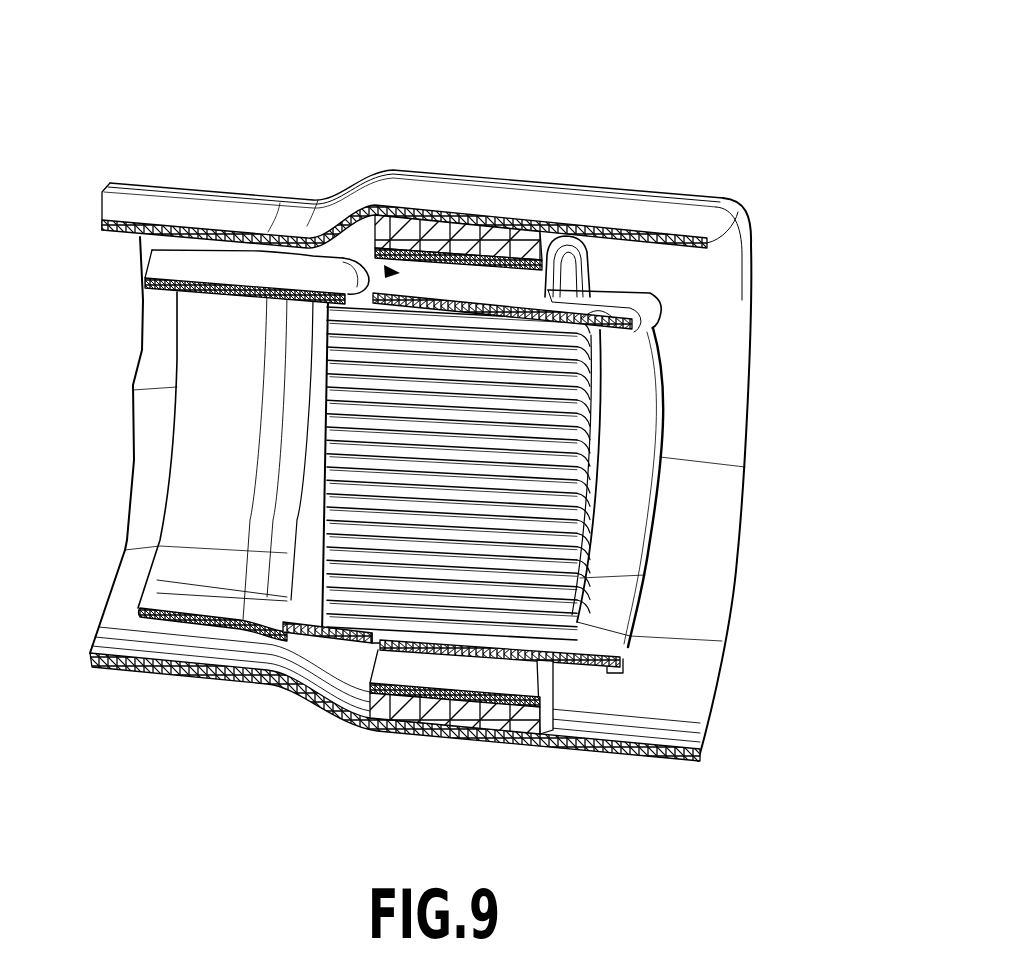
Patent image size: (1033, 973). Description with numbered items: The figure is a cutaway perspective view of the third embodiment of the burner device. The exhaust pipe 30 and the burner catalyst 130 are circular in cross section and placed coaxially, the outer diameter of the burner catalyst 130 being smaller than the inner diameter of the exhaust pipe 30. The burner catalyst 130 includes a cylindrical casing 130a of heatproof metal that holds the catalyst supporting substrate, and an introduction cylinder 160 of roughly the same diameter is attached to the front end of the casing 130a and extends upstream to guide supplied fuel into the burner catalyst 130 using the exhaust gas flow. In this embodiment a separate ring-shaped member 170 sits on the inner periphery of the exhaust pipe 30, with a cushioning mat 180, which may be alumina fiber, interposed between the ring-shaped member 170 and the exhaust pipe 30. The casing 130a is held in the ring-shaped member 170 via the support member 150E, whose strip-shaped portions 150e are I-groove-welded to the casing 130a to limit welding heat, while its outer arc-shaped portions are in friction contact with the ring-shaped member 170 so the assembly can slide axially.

The exhaust pipe 30 is at (617, 213).
The introduction cylinder 160 is at (197, 268).
The ring-shaped member 170 is at (492, 243).
The cushioning mat 180 is at (394, 267).
The support member 150E is at (293, 262).
The strip-shaped portion 150e is at (595, 290).
The cylindrical casing 130a is at (650, 327).
The burner catalyst 130 is at (630, 496).